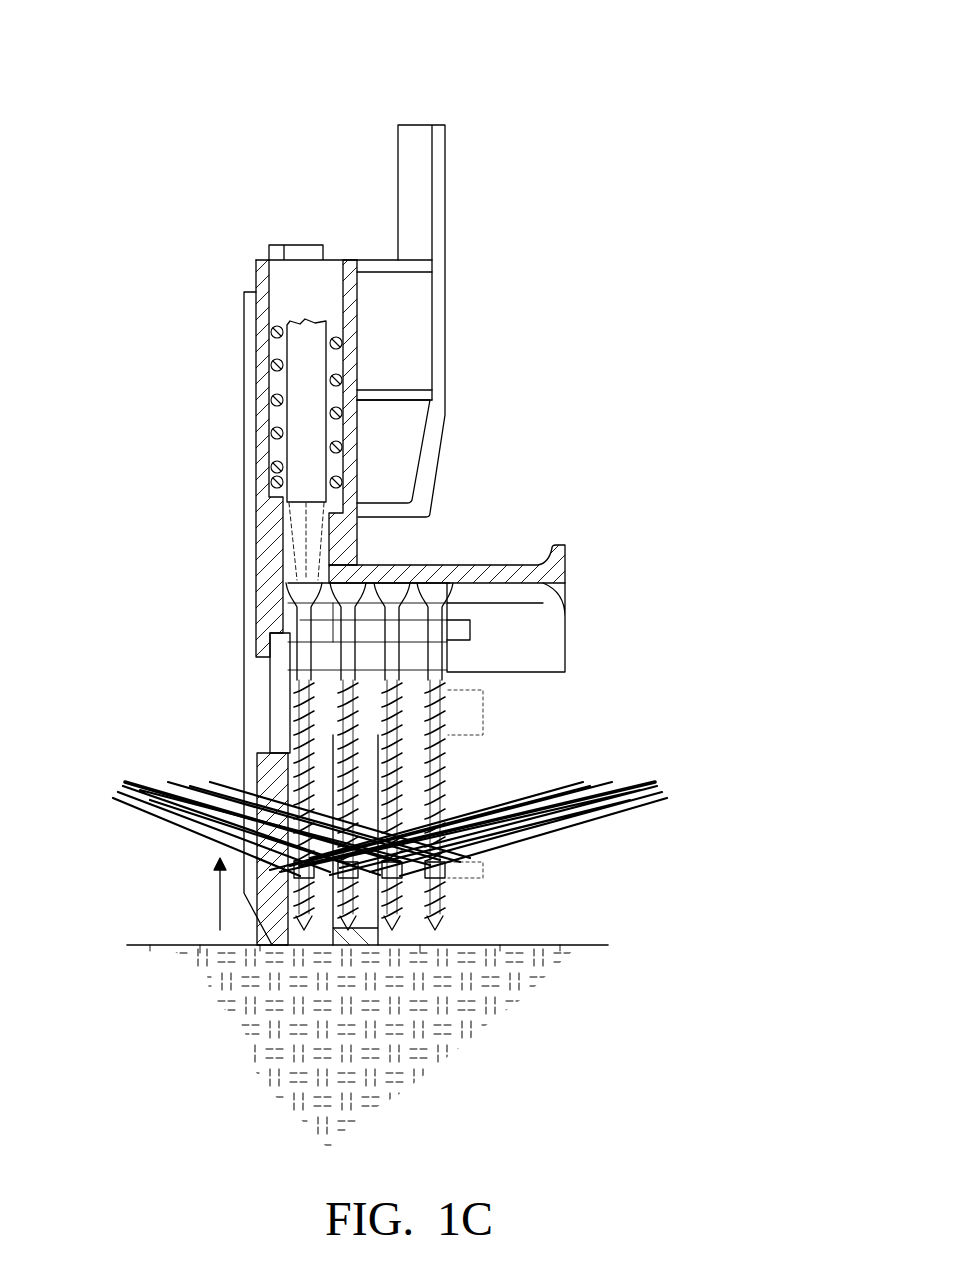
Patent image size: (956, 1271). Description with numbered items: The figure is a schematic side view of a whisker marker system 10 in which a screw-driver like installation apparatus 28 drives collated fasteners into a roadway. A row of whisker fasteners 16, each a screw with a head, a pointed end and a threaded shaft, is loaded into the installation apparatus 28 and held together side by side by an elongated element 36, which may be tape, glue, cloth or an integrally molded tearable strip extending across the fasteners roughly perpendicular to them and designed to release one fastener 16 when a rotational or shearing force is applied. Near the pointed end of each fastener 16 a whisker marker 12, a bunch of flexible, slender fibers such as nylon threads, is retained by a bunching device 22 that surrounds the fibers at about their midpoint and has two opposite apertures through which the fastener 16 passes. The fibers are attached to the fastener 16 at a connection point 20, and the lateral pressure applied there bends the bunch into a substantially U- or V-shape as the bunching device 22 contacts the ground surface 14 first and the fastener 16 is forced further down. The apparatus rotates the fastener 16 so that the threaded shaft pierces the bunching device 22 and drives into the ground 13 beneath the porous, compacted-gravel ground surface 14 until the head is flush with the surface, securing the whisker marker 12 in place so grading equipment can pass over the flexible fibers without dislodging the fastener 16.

The whisker marker system 10 is at (575, 113).
The installation apparatus 28 is at (243, 333).
The elongated element 36 is at (470, 640).
The whisker fastener 16 is at (447, 763).
The whisker marker 12 is at (581, 840).
The ground surface 14 is at (552, 943).
The ground 13 is at (470, 1073).
The connection point 20 is at (446, 875).
The bunching device 22 is at (312, 870).